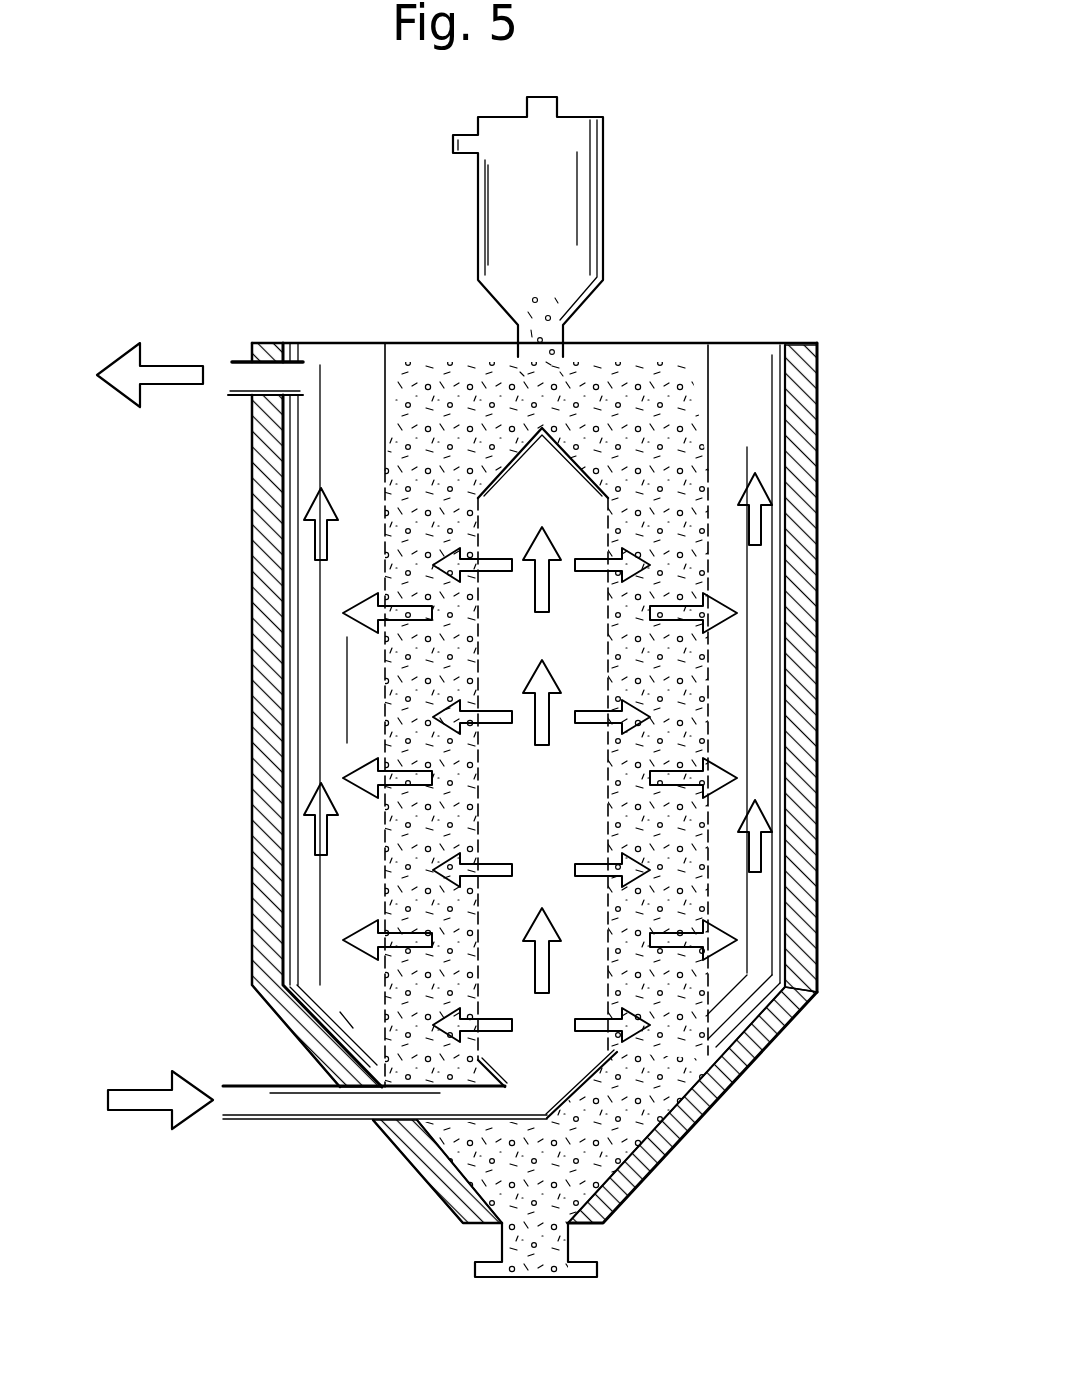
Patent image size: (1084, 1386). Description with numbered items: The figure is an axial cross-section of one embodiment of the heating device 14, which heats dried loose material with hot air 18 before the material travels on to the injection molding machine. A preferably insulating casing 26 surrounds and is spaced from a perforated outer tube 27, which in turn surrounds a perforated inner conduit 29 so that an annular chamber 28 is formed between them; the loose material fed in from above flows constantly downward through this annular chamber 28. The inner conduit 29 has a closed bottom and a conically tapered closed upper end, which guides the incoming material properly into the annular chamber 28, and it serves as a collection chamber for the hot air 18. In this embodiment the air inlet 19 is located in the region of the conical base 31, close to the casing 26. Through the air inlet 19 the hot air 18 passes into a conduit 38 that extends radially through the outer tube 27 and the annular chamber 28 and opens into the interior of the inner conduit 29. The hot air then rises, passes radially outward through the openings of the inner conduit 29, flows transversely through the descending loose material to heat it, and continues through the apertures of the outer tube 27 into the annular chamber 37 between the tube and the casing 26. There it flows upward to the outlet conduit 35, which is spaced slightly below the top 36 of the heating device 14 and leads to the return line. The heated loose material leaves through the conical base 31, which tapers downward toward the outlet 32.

The heating device 14 is at (782, 195).
The hot air 18 is at (148, 1105).
The air inlet 19 is at (270, 1103).
The casing 26 is at (805, 720).
The tube 27 is at (710, 650).
The annular chamber 28 is at (680, 480).
The conduit 29 is at (607, 927).
The conical base 31 is at (672, 1110).
The outlet 32 is at (593, 1273).
The outlet conduit 35 is at (255, 385).
The top 36 is at (402, 343).
The annular chamber 37 is at (743, 988).
The conduit 38 is at (408, 1148).